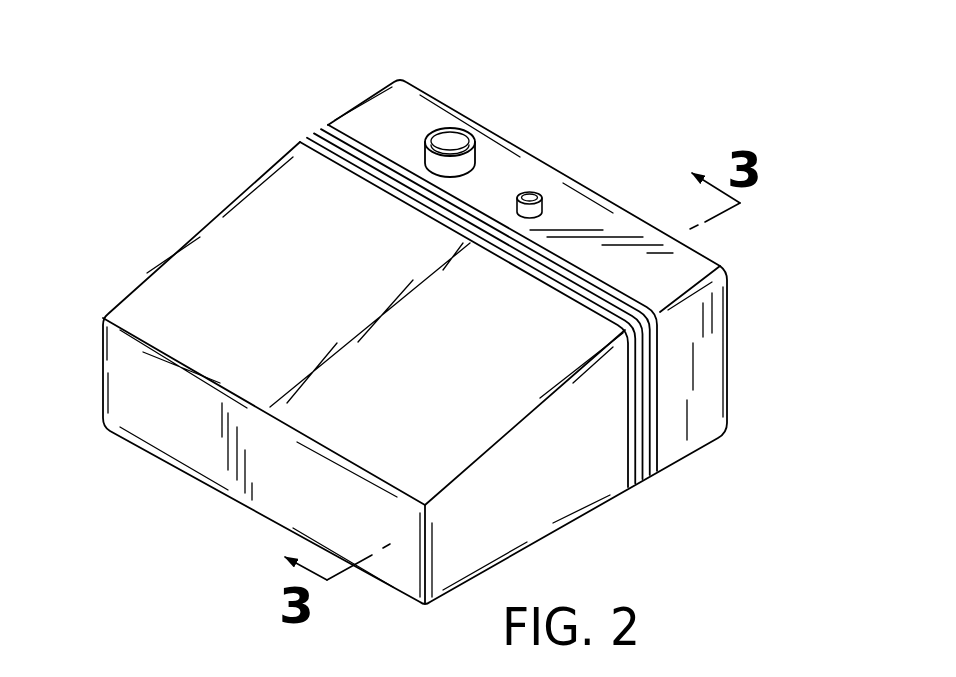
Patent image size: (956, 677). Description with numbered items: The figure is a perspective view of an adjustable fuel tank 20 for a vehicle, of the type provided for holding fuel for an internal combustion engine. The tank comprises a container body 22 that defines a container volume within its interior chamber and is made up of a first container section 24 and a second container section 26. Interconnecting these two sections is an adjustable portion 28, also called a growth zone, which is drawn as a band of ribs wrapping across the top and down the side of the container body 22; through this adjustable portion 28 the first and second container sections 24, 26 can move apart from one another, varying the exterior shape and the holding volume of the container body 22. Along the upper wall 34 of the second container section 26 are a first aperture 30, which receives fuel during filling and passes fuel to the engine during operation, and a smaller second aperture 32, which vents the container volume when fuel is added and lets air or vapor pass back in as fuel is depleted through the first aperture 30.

The adjustable fuel tank 20 is at (162, 510).
The container body 22 is at (572, 515).
The first container section 24 is at (221, 247).
The second container section 26 is at (377, 117).
The adjustable portion 28 is at (650, 430).
The first aperture 30 is at (452, 140).
The second aperture 32 is at (531, 195).
The upper wall 34 is at (580, 207).